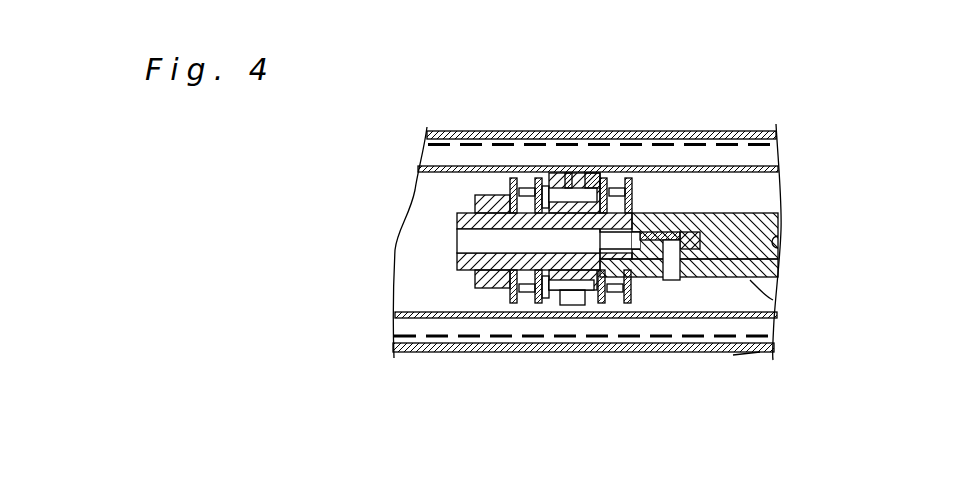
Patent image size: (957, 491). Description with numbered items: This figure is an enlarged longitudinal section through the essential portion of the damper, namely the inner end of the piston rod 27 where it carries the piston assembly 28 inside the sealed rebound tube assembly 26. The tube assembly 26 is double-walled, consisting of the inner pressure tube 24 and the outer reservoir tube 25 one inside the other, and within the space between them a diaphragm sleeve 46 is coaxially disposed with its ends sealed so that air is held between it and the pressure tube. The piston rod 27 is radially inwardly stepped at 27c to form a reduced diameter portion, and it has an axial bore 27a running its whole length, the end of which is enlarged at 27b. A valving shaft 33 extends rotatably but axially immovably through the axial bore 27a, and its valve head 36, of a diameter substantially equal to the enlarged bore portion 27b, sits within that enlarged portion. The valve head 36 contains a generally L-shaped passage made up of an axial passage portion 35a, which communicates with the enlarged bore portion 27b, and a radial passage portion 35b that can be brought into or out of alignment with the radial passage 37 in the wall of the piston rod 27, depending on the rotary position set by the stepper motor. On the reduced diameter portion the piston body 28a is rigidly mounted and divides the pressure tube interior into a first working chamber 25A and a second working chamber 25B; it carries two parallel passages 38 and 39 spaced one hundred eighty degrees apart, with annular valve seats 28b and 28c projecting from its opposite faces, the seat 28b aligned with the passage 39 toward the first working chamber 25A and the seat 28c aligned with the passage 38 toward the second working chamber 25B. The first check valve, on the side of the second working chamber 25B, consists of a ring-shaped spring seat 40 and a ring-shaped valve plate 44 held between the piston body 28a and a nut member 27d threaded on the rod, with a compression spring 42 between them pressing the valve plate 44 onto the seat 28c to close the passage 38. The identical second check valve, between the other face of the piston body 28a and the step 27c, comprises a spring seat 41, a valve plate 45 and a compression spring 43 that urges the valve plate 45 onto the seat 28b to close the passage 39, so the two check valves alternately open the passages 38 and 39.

The pressure tube 24 is at (605, 168).
The reservoir tube 25 is at (452, 352).
The first working chamber 25A is at (780, 170).
The second working chamber 25B is at (428, 214).
The sealed rebound tube assembly 26 is at (403, 354).
The piston rod 27 is at (773, 283).
The axial bore 27a is at (777, 242).
The enlarged bore portion 27b is at (455, 240).
The stepped portion 27c is at (720, 277).
The nut member 27d is at (475, 280).
The piston assembly 28 is at (507, 189).
The piston body 28a is at (590, 175).
The annular valve seat 28b is at (595, 292).
The annular valve seat 28c is at (567, 178).
The valving shaft 33 is at (775, 263).
The axial passage portion 35a is at (657, 245).
The radial passage portion 35b is at (697, 238).
The valve head 36 is at (757, 192).
The radial passage 37 is at (773, 302).
The passage 38 is at (578, 192).
The passage 39 is at (572, 306).
The spring seat 40 is at (510, 300).
The spring seat 41 is at (642, 230).
The compression spring 42 is at (535, 305).
The compression spring 43 is at (632, 300).
The valve plate 44 is at (542, 192).
The valve plate 45 is at (605, 300).
The diaphragm sleeve 46 is at (733, 355).